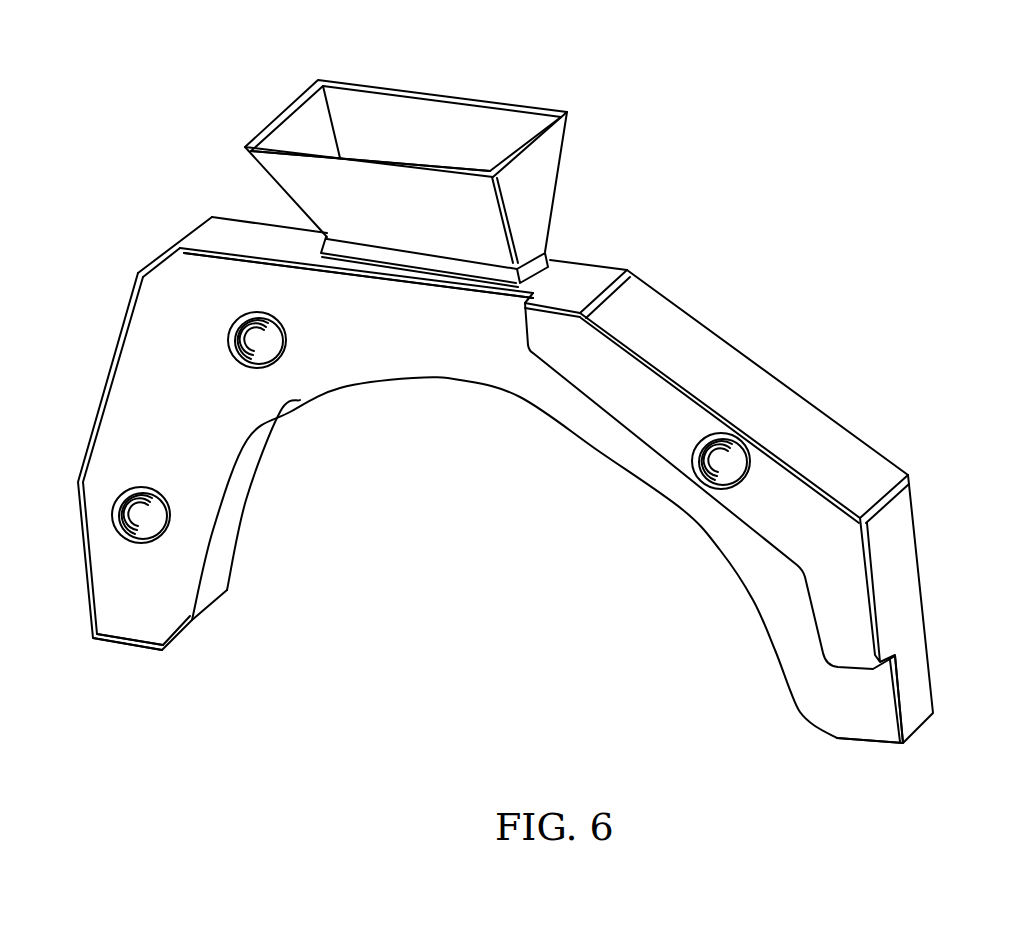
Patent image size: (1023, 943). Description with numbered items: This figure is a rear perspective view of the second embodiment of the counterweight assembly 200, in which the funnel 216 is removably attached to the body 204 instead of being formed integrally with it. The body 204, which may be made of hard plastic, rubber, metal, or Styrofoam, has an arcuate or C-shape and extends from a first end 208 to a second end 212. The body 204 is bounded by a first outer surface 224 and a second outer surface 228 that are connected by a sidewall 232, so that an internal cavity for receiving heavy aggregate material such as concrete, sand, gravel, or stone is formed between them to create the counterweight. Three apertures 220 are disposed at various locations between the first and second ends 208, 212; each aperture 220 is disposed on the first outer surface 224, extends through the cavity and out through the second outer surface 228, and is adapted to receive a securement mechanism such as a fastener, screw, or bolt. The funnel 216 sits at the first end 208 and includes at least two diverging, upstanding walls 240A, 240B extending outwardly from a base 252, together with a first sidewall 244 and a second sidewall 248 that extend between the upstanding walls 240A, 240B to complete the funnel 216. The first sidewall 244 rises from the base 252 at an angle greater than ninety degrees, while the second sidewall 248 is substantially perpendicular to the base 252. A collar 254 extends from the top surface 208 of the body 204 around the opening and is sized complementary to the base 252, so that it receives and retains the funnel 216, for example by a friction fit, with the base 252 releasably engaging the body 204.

The counterweight assembly 200 is at (535, 418).
The body 204 is at (535, 493).
The first end 208 is at (224, 226).
The second end 212 is at (130, 648).
The funnel 216 is at (418, 160).
The aperture 220 is at (275, 357).
The first outer surface 224 is at (853, 713).
The second outer surface 228 is at (917, 520).
The sidewall 232 is at (742, 373).
The upstanding wall 240A is at (375, 118).
The upstanding wall 240B is at (432, 228).
The first sidewall 244 is at (290, 125).
The second sidewall 248 is at (542, 163).
The base 252 is at (543, 248).
The collar 254 is at (558, 272).